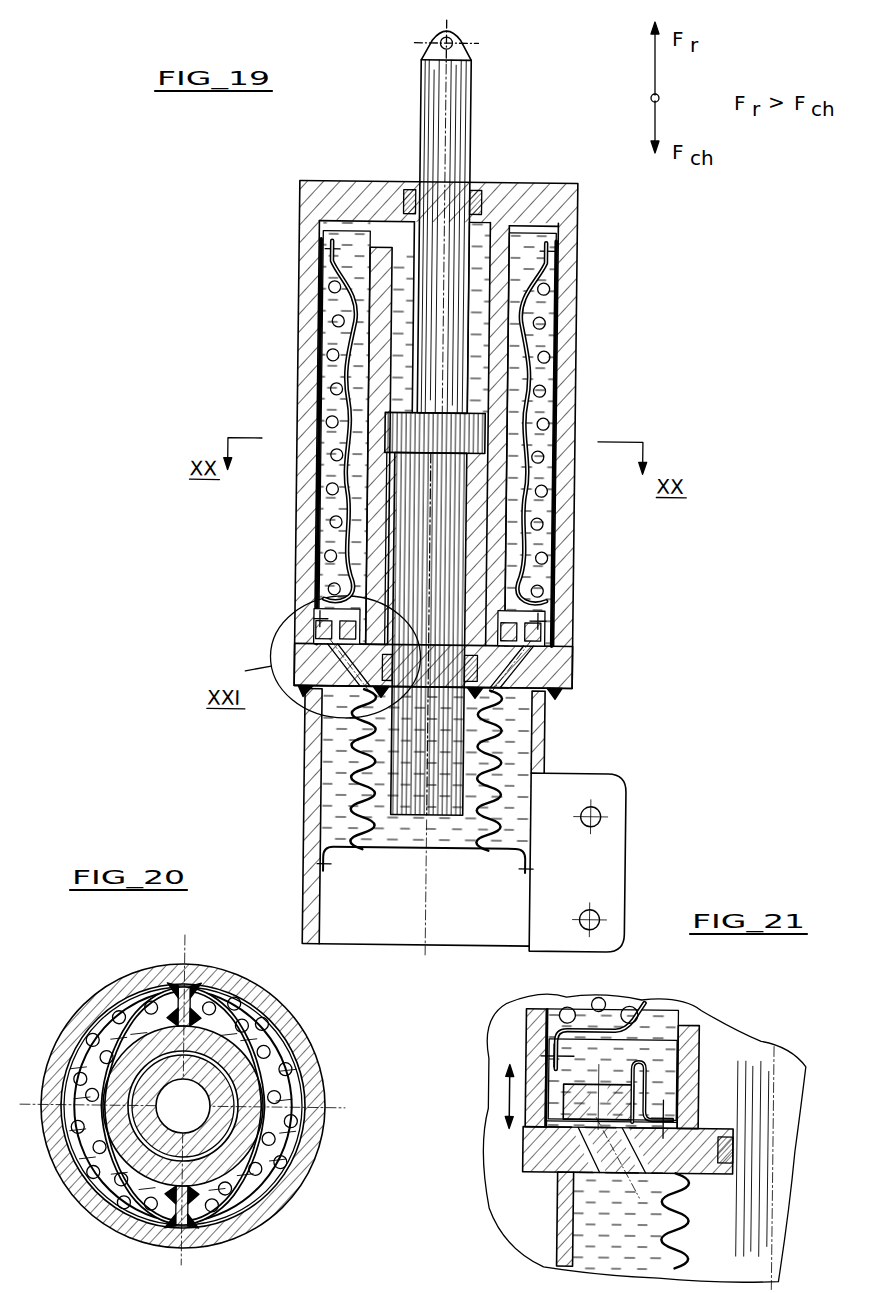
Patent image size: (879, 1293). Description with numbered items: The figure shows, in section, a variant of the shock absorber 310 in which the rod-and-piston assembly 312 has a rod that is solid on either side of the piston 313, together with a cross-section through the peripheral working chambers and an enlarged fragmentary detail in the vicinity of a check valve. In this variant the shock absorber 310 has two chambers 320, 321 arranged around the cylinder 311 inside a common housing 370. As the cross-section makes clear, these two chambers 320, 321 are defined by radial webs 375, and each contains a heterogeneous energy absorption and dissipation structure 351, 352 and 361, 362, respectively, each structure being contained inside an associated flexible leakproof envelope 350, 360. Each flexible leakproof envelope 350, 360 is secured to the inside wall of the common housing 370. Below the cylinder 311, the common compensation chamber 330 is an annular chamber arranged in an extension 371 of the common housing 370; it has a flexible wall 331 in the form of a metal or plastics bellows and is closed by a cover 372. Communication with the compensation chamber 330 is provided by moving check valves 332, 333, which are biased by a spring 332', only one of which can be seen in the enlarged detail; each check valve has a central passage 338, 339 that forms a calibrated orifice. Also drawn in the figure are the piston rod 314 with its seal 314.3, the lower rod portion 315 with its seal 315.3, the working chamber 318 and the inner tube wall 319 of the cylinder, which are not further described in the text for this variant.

In FIG. 19, the shock absorber 310 is at (268, 226).
In FIG. 19, the cylinder 311 is at (560, 382).
In FIG. 20, the cylinder 311 is at (246, 1005).
In FIG. 21, the cylinder 311 is at (700, 1030).
In FIG. 19, the rod-and-piston assembly 312 is at (412, 108).
In FIG. 19, the piston 313 is at (562, 416).
In FIG. 20, the piston 313 is at (215, 1085).
In FIG. 19, the piston rod 314 is at (455, 150).
In FIG. 19, the rod seal 314.3 is at (378, 245).
In FIG. 19, the lower piston rod portion 315 is at (405, 775).
In FIG. 21, the lower piston rod portion 315 is at (776, 1062).
In FIG. 19, the lower rod seal 315.3 is at (540, 690).
In FIG. 19, the working chamber 318 is at (558, 276).
In FIG. 19, the inner tube wall 319 is at (366, 556).
In FIG. 19, the chamber 320 is at (342, 382).
In FIG. 20, the chamber 320 is at (116, 1222).
In FIG. 21, the chamber 320 is at (680, 1010).
In FIG. 19, the chamber 321 is at (545, 505).
In FIG. 20, the chamber 321 is at (250, 1240).
In FIG. 19, the common compensation chamber 330 is at (555, 722).
In FIG. 21, the common compensation chamber 330 is at (585, 1200).
In FIG. 19, the flexible wall 331 is at (525, 768).
In FIG. 21, the flexible wall 331 is at (684, 1236).
In FIG. 19, the check valve 332 is at (291, 645).
In FIG. 21, the check valve 332 is at (536, 1096).
In FIG. 21, the spring 332' is at (740, 1095).
In FIG. 19, the check valve 333 is at (542, 668).
In FIG. 21, the central passage 338 is at (532, 1057).
In FIG. 19, the central passage 339 is at (548, 628).
In FIG. 19, the flexible leakproof envelope 350 is at (336, 280).
In FIG. 20, the flexible leakproof envelope 350 is at (120, 985).
In FIG. 21, the flexible leakproof envelope 350 is at (636, 1008).
In FIG. 19, the heterogeneous structure 351 is at (330, 318).
In FIG. 20, the heterogeneous structure 351 is at (150, 988).
In FIG. 21, the heterogeneous structure 351 is at (580, 992).
In FIG. 19, the heterogeneous structure 352 is at (308, 510).
In FIG. 20, the heterogeneous structure 352 is at (78, 1030).
In FIG. 21, the heterogeneous structure 352 is at (618, 992).
In FIG. 19, the flexible leakproof envelope 360 is at (540, 325).
In FIG. 20, the flexible leakproof envelope 360 is at (282, 1100).
In FIG. 19, the heterogeneous structure 361 is at (555, 590).
In FIG. 20, the heterogeneous structure 361 is at (300, 1122).
In FIG. 19, the heterogeneous structure 362 is at (552, 468).
In FIG. 20, the heterogeneous structure 362 is at (300, 1182).
In FIG. 19, the common housing 370 is at (578, 560).
In FIG. 20, the common housing 370 is at (298, 1010).
In FIG. 21, the common housing 370 is at (540, 1150).
In FIG. 19, the extension 371 is at (320, 846).
In FIG. 21, the extension 371 is at (566, 1240).
In FIG. 19, the cover 372 is at (405, 862).
In FIG. 20, the radial webs 375 is at (192, 985).